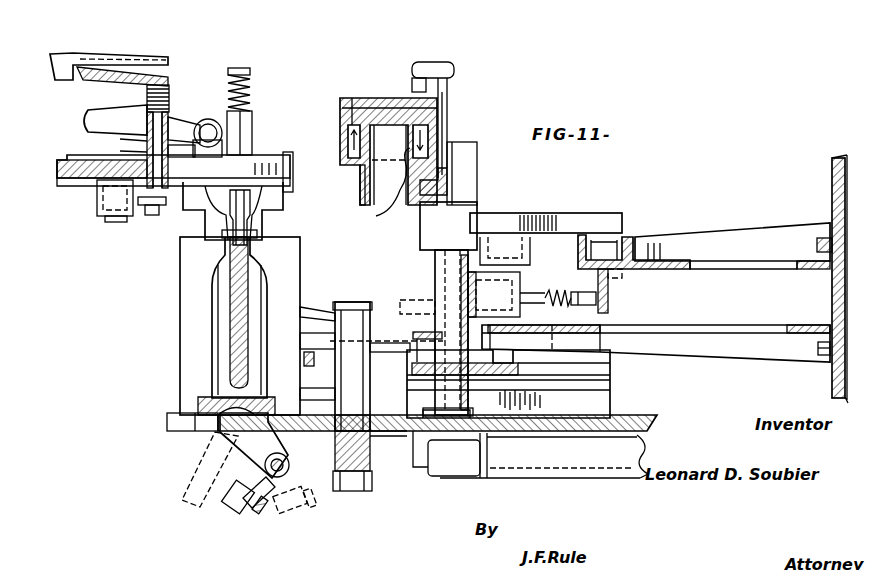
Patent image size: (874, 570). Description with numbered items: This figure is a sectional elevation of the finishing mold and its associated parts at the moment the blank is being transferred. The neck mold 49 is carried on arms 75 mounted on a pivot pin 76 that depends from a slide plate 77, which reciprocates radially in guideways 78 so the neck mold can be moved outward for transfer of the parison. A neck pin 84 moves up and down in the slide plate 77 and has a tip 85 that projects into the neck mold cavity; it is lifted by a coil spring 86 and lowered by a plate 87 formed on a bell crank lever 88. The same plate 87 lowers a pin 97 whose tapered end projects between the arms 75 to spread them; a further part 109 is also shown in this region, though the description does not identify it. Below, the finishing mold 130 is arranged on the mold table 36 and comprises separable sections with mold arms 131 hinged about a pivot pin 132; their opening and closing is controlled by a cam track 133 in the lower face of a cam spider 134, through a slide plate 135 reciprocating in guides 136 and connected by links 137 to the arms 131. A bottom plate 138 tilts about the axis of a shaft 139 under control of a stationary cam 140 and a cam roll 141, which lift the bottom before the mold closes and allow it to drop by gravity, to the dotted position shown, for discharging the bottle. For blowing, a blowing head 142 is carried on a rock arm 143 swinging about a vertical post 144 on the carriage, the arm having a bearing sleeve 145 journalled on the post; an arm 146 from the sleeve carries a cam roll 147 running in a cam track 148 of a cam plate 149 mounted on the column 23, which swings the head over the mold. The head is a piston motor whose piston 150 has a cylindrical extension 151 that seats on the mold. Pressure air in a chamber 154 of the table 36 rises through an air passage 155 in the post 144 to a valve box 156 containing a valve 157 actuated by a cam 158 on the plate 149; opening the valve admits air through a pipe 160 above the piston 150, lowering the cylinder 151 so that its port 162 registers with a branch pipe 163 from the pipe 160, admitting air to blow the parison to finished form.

The column 23 is at (832, 178).
The mold table 36 is at (407, 436).
The neck mold 49 is at (284, 213).
The arms 75 is at (140, 215).
The pivot pin 76 is at (112, 220).
The slide plate 77 is at (83, 180).
The guideways 78 is at (70, 162).
The neck pin 84 is at (230, 88).
The tip 85 is at (273, 195).
The coil spring 86 is at (250, 88).
The plate 87 is at (128, 70).
The bell crank lever 88 is at (58, 60).
The pin 97 is at (157, 145).
The link 109 is at (118, 108).
The finishing mold 130 is at (188, 317).
The mold arms 131 is at (307, 320).
The pivot pin 132 is at (338, 310).
The cam track 133 is at (522, 327).
The cam spider 134 is at (777, 328).
The slide plate 135 is at (414, 385).
The guides 136 is at (610, 383).
The links 137 is at (378, 345).
The bottom plate 138 is at (198, 403).
The shaft 139 is at (289, 465).
The stationary cam 140 is at (260, 518).
The cam roll 141 is at (236, 508).
The blowing head 142 is at (356, 98).
The rock arm 143 is at (477, 175).
The vertical post 144 is at (437, 292).
The bearing sleeve 145 is at (478, 204).
The arm 146 is at (545, 213).
The cam roll 147 is at (610, 243).
The cam track 148 is at (660, 250).
The cam plate 149 is at (777, 218).
The piston 150 is at (342, 110).
The cylindrical extension 151 is at (360, 178).
The chamber 154 is at (452, 477).
The air passage 155 is at (415, 302).
The valve box 156 is at (515, 268).
The valve 157 is at (515, 284).
The cam 158 is at (597, 296).
The pipe 160 is at (456, 84).
The port 162 is at (376, 216).
The branch pipe 163 is at (450, 106).